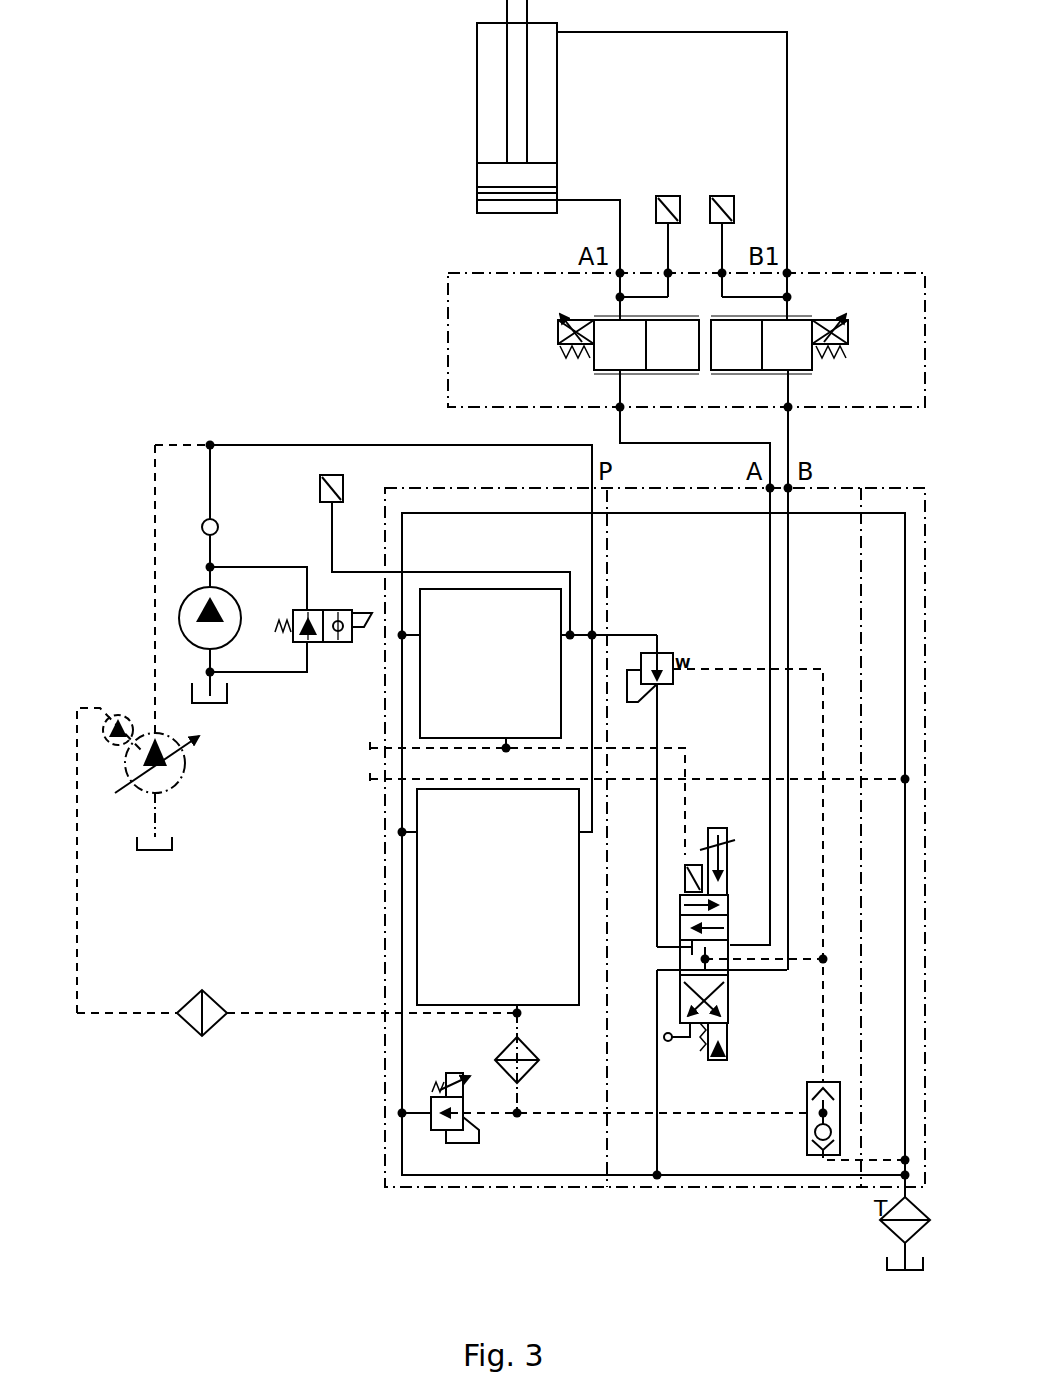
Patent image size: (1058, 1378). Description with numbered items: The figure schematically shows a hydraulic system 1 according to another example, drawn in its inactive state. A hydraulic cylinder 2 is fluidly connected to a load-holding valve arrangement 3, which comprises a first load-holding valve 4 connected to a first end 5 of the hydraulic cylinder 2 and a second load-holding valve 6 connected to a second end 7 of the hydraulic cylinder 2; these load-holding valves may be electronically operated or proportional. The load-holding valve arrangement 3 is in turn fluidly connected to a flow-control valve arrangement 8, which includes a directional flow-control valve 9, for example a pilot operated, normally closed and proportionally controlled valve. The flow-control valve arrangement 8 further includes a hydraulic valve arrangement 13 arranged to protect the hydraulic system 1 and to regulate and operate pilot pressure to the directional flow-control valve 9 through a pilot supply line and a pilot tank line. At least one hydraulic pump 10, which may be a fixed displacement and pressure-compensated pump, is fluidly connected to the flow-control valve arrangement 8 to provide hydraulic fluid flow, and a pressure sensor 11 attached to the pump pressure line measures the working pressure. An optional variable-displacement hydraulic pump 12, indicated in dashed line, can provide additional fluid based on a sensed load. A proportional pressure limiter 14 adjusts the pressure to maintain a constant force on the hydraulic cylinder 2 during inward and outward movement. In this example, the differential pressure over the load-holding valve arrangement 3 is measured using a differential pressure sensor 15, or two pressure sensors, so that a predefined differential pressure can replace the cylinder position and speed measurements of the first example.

The hydraulic system 1 is at (262, 229).
The hydraulic cylinder 2 is at (477, 75).
The load-holding valve arrangement 3 is at (840, 273).
The first load-holding valve 4 is at (607, 318).
The first end 5 is at (477, 203).
The second load-holding valve 6 is at (803, 318).
The second end 7 is at (477, 31).
The flow-control valve arrangement 8 is at (525, 1188).
The directional flow-control valve 9 is at (728, 1005).
The hydraulic pump 10 is at (186, 604).
The pressure sensor 11 is at (334, 475).
The variable-displacement hydraulic pump 12 is at (143, 790).
The hydraulic valve arrangement 13 is at (420, 682).
The proportional pressure limiter 14 is at (431, 1103).
The differential pressure sensor 15 is at (722, 196).